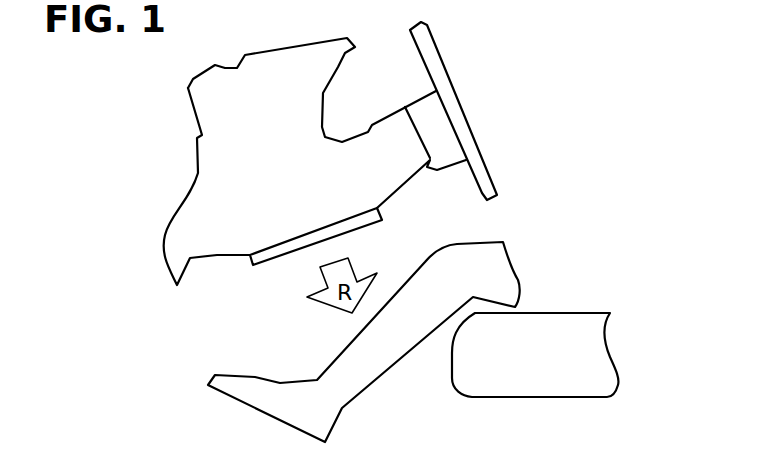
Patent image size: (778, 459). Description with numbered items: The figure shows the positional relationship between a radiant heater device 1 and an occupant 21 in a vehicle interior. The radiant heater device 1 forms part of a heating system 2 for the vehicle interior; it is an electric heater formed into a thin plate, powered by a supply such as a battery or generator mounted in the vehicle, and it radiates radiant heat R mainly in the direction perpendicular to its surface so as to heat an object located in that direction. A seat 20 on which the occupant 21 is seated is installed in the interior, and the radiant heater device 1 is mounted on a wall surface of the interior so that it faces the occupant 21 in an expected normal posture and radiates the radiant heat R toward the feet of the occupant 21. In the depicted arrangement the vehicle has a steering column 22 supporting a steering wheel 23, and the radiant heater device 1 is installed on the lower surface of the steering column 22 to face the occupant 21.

The radiant heater device 1 is at (254, 268).
The heating system 2 is at (555, 92).
The seat 20 is at (510, 397).
The occupant 21 is at (373, 382).
The steering column 22 is at (392, 193).
The steering wheel 23 is at (455, 87).